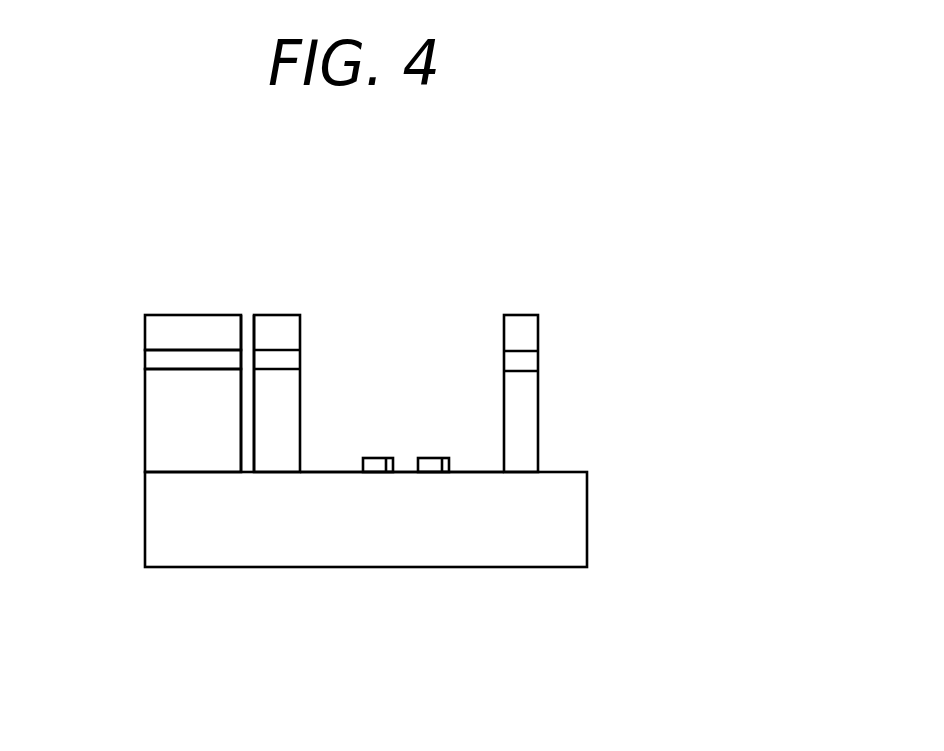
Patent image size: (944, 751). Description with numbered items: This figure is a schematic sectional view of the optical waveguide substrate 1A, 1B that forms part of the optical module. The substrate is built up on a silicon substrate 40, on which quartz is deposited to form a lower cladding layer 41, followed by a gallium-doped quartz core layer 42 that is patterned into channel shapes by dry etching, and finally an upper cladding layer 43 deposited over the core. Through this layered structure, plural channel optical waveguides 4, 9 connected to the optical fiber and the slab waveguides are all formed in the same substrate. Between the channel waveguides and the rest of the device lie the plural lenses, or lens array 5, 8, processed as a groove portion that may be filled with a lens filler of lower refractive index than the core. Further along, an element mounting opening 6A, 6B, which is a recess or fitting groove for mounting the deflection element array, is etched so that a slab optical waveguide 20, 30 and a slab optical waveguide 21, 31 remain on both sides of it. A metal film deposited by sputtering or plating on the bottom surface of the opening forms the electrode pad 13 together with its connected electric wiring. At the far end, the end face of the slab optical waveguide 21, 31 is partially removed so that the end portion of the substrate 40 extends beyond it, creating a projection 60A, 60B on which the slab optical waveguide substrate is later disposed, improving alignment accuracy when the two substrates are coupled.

The optical waveguide substrate 1A is at (423, 407).
The optical waveguide substrate 1B is at (423, 407).
The channel optical waveguides 4 is at (153, 347).
The channel optical waveguides 9 is at (153, 347).
The lenses (lens array) 5 is at (215, 347).
The lenses (lens array) 8 is at (238, 290).
The slab optical waveguide 20 is at (245, 309).
The slab optical waveguide 30 is at (272, 285).
The slab optical waveguide 21 is at (559, 340).
The slab optical waveguide 31 is at (530, 285).
The element mounting opening 6A is at (402, 373).
The element mounting opening 6B is at (405, 350).
The electrode pad 13 is at (375, 463).
The silicon substrate 40 is at (152, 512).
The lower cladding layer 41 is at (152, 418).
The core layer 42 is at (152, 362).
The upper cladding layer 43 is at (152, 329).
The projection 60A is at (423, 385).
The projection 60B is at (423, 385).